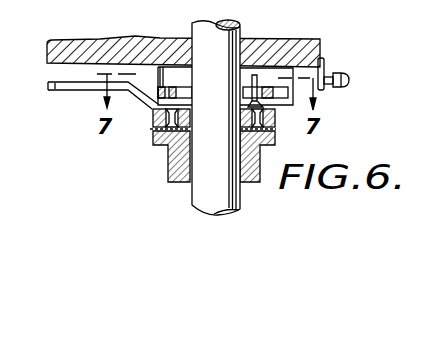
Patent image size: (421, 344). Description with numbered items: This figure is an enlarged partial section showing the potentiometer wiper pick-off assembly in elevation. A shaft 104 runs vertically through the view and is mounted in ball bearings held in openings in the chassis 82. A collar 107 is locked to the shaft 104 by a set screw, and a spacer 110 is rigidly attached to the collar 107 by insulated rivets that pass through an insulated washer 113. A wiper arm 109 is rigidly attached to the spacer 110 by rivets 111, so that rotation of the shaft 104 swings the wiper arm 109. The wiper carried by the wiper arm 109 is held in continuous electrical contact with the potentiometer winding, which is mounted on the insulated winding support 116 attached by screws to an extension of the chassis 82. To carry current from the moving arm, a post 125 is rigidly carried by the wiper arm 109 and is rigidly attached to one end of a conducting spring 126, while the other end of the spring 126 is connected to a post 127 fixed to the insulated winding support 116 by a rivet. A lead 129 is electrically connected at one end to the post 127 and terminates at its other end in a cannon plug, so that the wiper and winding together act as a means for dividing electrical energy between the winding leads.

The chassis 82 is at (214, 3).
The shaft 104 is at (205, 198).
The collar 107 is at (170, 166).
The wiper arm 109 is at (54, 91).
The spacer 110 is at (164, 123).
The rivets 111 is at (152, 118).
The insulated washer 113 is at (276, 132).
The insulated winding support 116 is at (87, 43).
The post 125 is at (272, 68).
The conducting spring 126 is at (160, 86).
The post 127 is at (323, 70).
The lead 129 is at (346, 88).